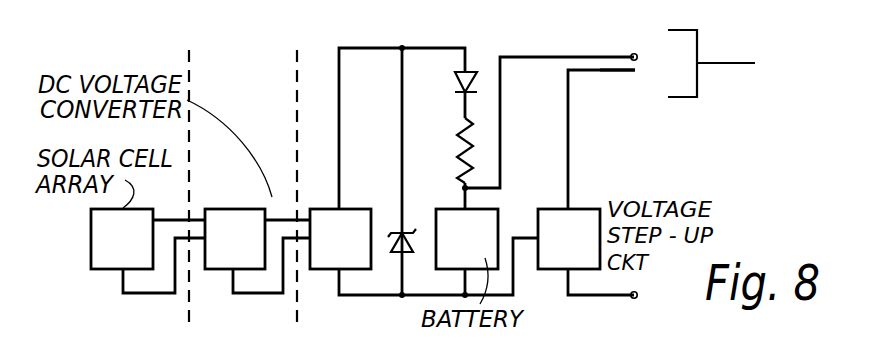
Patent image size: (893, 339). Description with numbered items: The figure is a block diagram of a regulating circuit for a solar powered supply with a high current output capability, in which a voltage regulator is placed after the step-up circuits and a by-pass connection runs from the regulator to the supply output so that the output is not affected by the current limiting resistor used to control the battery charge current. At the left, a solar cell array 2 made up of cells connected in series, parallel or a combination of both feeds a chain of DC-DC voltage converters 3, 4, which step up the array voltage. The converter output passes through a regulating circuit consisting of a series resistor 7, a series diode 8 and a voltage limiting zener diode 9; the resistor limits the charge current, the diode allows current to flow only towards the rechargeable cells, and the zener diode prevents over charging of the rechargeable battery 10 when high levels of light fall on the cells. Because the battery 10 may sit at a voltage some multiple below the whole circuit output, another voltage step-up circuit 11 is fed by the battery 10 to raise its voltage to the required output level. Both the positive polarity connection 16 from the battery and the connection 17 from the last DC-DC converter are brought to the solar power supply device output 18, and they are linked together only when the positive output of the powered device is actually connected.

The solar cell array 2 is at (113, 250).
The DC-DC voltage converter 3 is at (226, 250).
The DC-DC voltage converter 4 is at (331, 250).
The series resistor 7 is at (458, 135).
The series diode 8 is at (455, 78).
The voltage limiting zener diode 9 is at (406, 232).
The rechargeable battery 10 is at (453, 250).
The voltage step-up circuit 11 is at (555, 250).
The positive polarity connection 16 is at (630, 52).
The connection to the last DC-DC converter 17 is at (612, 71).
The solar power supply device output 18 is at (697, 50).